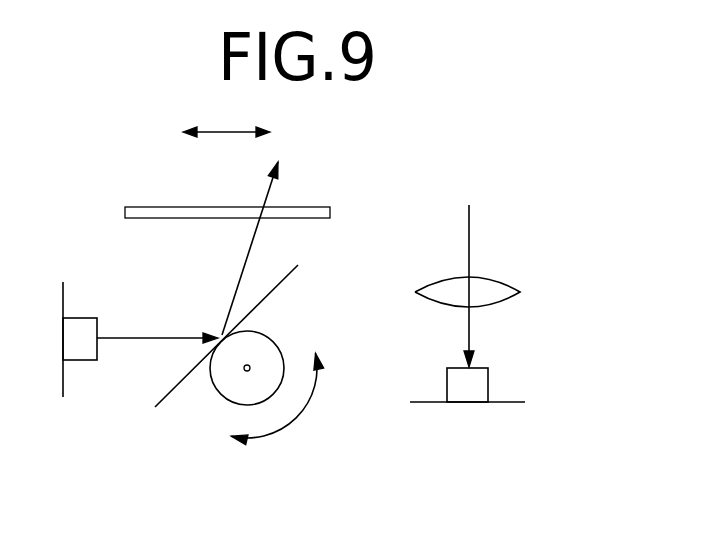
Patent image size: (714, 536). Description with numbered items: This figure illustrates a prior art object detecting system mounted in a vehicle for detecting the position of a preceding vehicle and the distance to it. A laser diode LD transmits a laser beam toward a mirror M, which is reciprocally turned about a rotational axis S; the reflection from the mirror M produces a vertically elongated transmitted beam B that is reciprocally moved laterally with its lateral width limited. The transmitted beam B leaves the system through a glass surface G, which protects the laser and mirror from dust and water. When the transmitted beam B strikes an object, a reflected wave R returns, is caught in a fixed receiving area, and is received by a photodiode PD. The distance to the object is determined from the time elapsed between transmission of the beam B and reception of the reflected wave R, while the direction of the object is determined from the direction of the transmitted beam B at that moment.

The glass surface G is at (135, 207).
The transmitted beam B is at (267, 198).
The mirror M is at (268, 294).
The laser diode LD is at (78, 350).
The rotational axis S is at (245, 372).
The reflected wave R is at (470, 237).
The photodiode PD is at (475, 383).